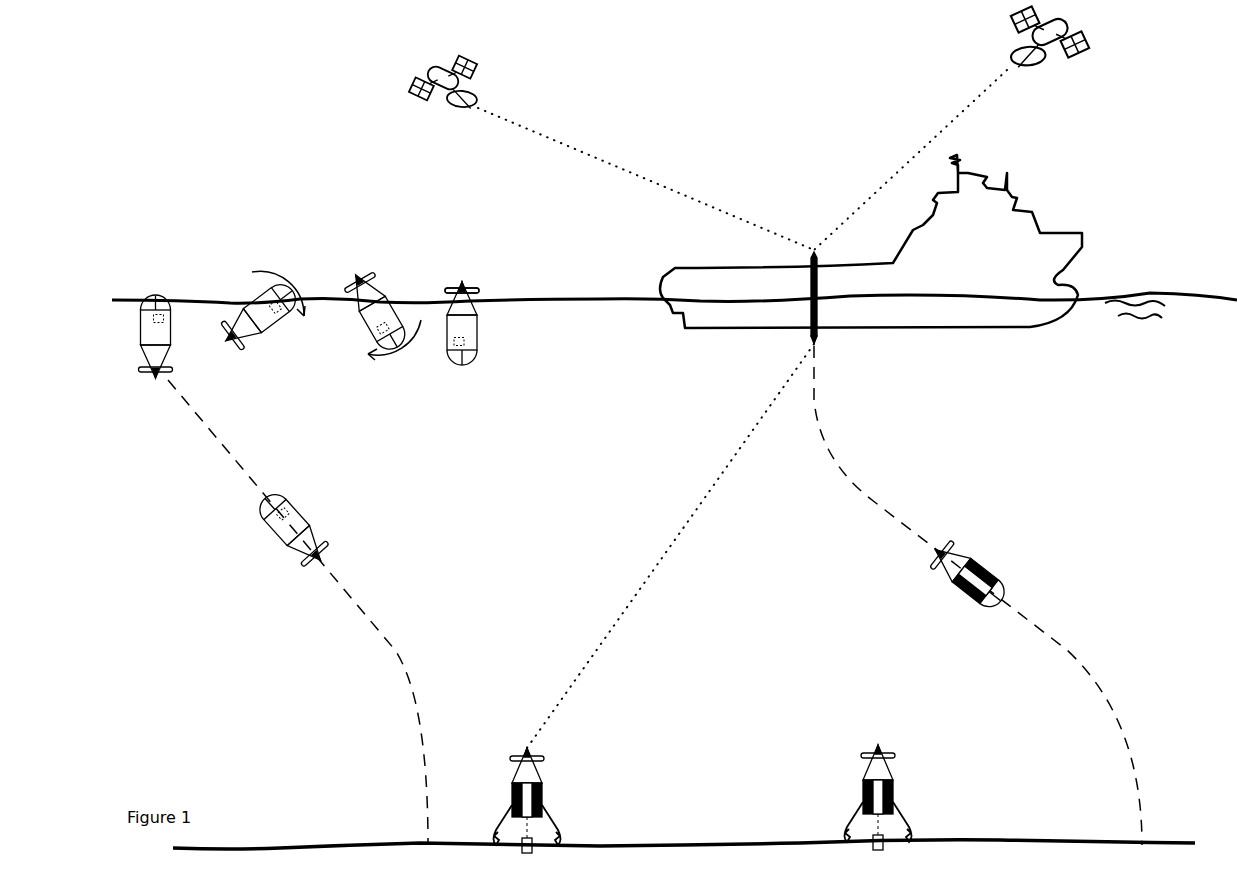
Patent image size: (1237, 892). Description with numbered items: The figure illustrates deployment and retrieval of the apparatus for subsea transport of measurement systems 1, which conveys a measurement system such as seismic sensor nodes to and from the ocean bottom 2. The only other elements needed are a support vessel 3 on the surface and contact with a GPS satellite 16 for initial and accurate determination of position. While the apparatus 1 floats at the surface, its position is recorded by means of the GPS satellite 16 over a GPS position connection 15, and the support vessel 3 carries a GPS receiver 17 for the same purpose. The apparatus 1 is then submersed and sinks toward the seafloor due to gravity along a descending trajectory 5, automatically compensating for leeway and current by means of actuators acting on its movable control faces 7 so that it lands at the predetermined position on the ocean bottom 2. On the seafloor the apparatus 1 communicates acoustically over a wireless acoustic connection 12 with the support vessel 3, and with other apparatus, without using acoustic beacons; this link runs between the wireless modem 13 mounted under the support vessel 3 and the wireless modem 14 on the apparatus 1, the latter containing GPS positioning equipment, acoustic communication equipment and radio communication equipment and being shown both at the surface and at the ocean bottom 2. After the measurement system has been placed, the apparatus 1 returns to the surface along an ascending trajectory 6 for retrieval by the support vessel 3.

The apparatus for subsea transport of measurement systems 1 is at (477, 330).
The ocean bottom 2 is at (277, 848).
The support vessel 3 is at (1040, 328).
The descending trajectory 5 is at (1130, 733).
The ascending trajectory 6 is at (399, 662).
The control face 7 is at (450, 288).
The wireless acoustic connection 12 is at (666, 550).
The wireless modem under the support vessel 13 is at (817, 340).
The wireless modem on the apparatus 14 is at (464, 283).
The GPS position connection 15 is at (695, 200).
The GPS satellite 16 is at (1095, 62).
The GPS receiver 17 is at (815, 250).